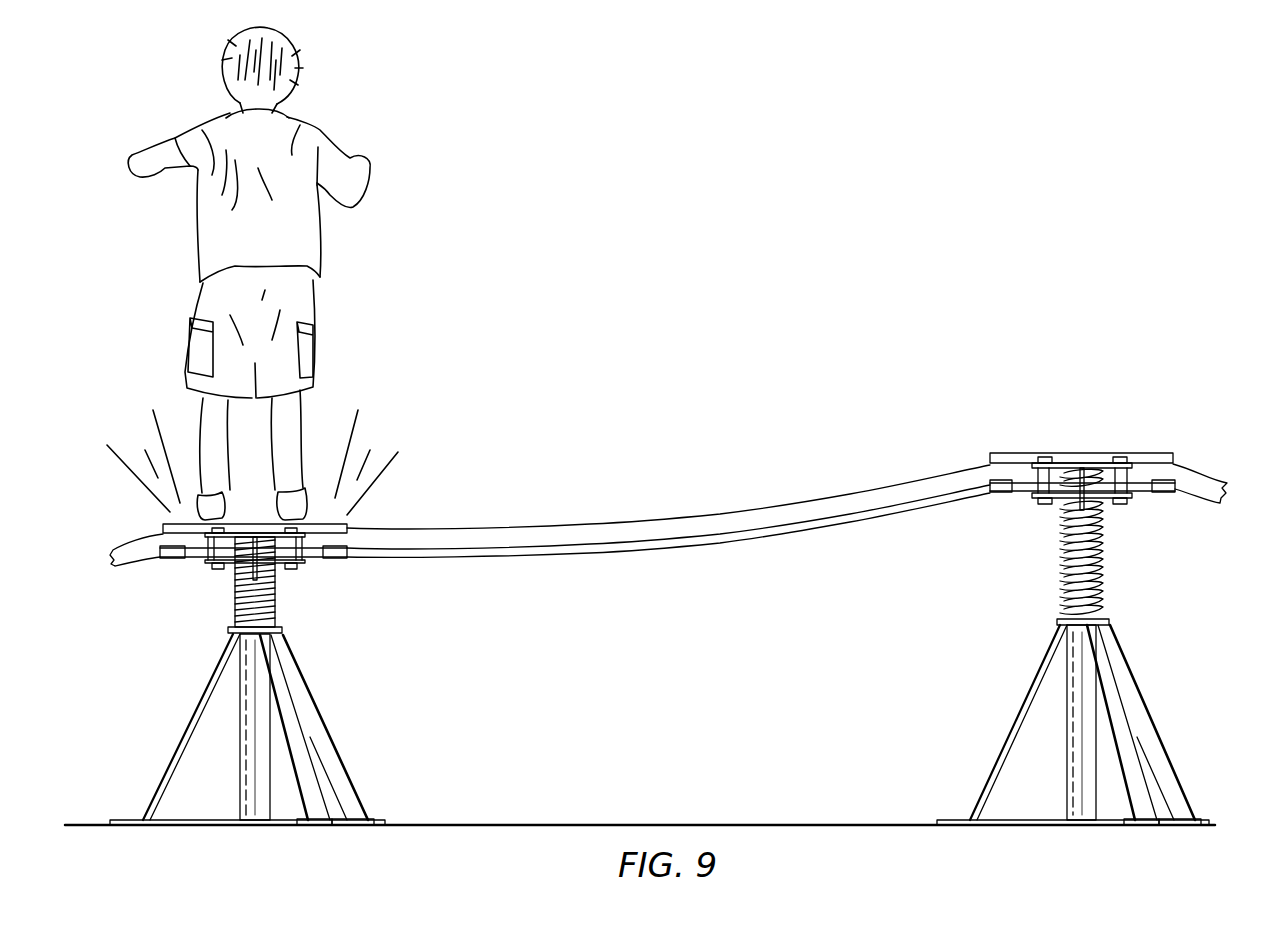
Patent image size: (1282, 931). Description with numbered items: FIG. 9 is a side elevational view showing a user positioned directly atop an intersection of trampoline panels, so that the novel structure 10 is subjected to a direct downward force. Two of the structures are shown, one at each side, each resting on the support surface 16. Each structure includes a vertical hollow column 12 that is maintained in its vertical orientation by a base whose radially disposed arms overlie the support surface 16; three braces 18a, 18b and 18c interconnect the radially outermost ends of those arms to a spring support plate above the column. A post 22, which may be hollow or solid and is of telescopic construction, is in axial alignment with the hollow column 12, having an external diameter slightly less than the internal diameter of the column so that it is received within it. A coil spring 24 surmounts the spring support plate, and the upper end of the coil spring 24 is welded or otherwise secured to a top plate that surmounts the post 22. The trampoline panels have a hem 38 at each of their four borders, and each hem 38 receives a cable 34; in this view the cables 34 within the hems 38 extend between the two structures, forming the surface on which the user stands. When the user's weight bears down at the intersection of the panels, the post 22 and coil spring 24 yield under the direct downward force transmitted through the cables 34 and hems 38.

The novel structure 10 is at (351, 514).
The vertical hollow column 12 is at (247, 745).
The support surface 16 is at (663, 823).
The brace 18a is at (183, 724).
The brace 18b is at (330, 724).
The brace 18c is at (303, 810).
The post 22 is at (1062, 555).
The coil spring 24 is at (283, 588).
The cable 34 is at (667, 542).
The hem 38 is at (347, 533).